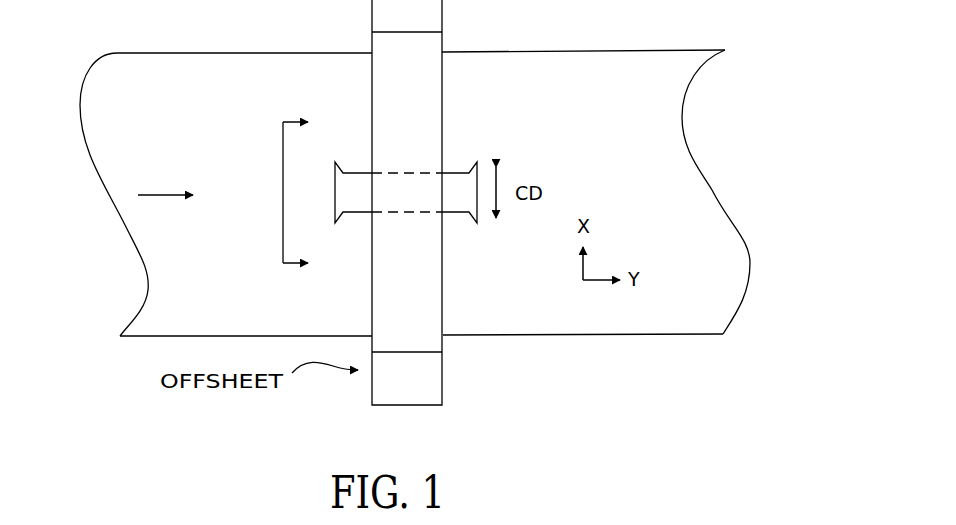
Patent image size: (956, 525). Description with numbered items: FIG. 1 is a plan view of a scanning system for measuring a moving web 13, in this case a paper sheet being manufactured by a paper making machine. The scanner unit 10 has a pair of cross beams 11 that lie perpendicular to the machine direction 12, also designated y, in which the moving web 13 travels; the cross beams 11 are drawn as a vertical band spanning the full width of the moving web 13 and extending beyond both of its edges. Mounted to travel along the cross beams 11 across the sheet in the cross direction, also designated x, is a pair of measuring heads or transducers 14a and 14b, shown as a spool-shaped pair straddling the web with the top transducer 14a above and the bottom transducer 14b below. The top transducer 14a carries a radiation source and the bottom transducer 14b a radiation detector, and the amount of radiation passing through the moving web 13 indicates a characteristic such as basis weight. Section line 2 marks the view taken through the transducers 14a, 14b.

The section line 2- 2 is at (309, 195).
The scanner unit 10 is at (463, 385).
The cross beams 11 is at (442, 100).
The machine direction 12 is at (158, 195).
The moving web 13 is at (145, 290).
The top transducer 14a is at (457, 170).
The bottom transducer 14b is at (424, 192).